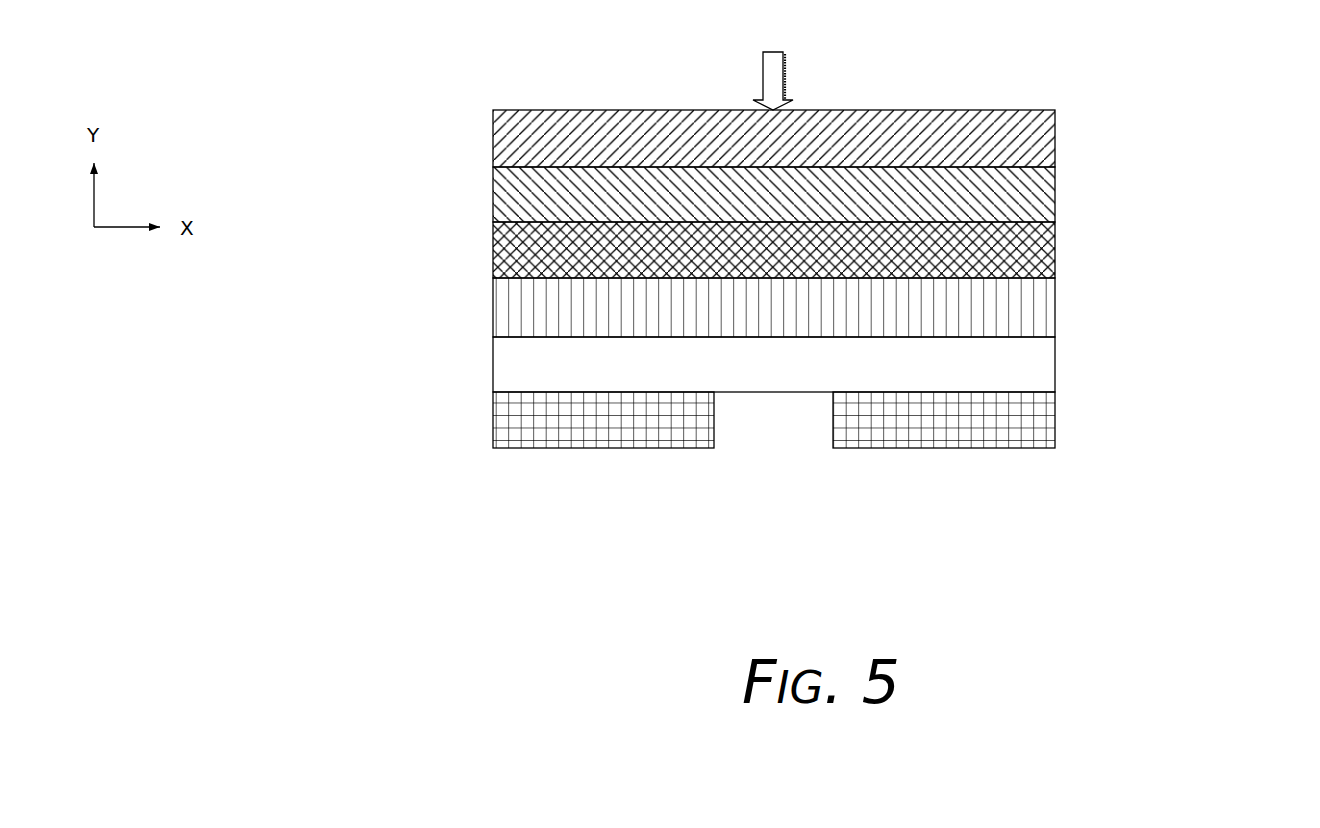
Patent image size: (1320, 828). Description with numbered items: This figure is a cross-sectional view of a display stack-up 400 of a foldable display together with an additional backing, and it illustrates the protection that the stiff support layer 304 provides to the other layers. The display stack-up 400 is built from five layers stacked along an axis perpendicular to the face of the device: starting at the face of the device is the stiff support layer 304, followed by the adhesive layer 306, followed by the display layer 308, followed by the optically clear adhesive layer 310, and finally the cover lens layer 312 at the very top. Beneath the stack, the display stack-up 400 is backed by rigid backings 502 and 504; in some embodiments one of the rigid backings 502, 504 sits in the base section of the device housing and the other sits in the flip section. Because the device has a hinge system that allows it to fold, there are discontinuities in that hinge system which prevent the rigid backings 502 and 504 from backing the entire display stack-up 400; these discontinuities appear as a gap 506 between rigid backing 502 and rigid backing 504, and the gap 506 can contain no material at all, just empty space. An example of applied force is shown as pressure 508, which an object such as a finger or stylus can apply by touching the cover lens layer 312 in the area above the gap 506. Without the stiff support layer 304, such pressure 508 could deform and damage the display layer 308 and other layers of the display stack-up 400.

The pressure 508 is at (786, 62).
The cover lens layer 312 is at (1057, 138).
The optically clear adhesive layer 310 is at (1057, 193).
The display layer 308 is at (1057, 258).
The adhesive layer 306 is at (1057, 315).
The stiff support layer 304 is at (1057, 362).
The rigid backing 504 is at (1055, 420).
The rigid backing 502 is at (491, 422).
The display stack-up 400 is at (850, 251).
The gap 506 is at (835, 460).